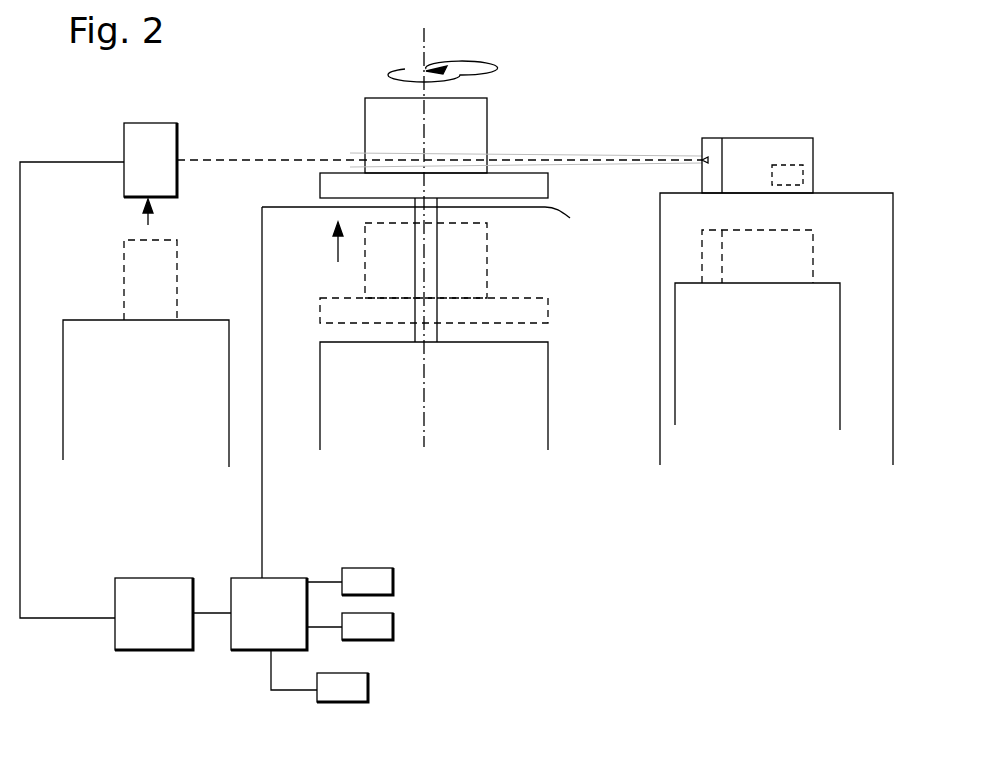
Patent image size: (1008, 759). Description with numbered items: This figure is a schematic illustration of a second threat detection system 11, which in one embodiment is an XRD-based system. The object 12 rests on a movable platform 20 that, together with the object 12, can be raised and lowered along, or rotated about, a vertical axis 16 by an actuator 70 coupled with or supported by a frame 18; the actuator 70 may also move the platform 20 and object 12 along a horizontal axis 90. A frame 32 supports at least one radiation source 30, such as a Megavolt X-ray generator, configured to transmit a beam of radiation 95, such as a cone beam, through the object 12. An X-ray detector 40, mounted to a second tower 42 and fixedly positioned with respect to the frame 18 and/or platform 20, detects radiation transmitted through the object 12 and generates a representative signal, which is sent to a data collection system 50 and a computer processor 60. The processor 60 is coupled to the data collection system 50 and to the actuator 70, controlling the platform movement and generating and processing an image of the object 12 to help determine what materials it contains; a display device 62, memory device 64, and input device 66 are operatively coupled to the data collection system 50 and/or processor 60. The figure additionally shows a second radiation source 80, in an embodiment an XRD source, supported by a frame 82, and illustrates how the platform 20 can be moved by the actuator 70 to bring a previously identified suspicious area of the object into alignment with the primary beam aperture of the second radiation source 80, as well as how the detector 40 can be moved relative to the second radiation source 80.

The second threat detection system 11 is at (635, 120).
The object 12 is at (487, 102).
The vertical axis 16 is at (424, 42).
The frame 18 is at (548, 406).
The movable platform 20 is at (548, 186).
The radiation source 30 is at (815, 245).
The frame 32 is at (840, 391).
The X-ray detector 40 is at (160, 123).
The second tower 42 is at (82, 320).
The data collection system 50 is at (147, 578).
The computer processor 60 is at (280, 578).
The display device 62 is at (380, 568).
The memory device 64 is at (380, 610).
The input device 66 is at (345, 673).
The actuator 70 is at (431, 224).
The second radiation source 80 is at (780, 138).
The frame 82 is at (848, 193).
The horizontal axis 90 is at (520, 160).
The beam of radiation 95 is at (648, 155).